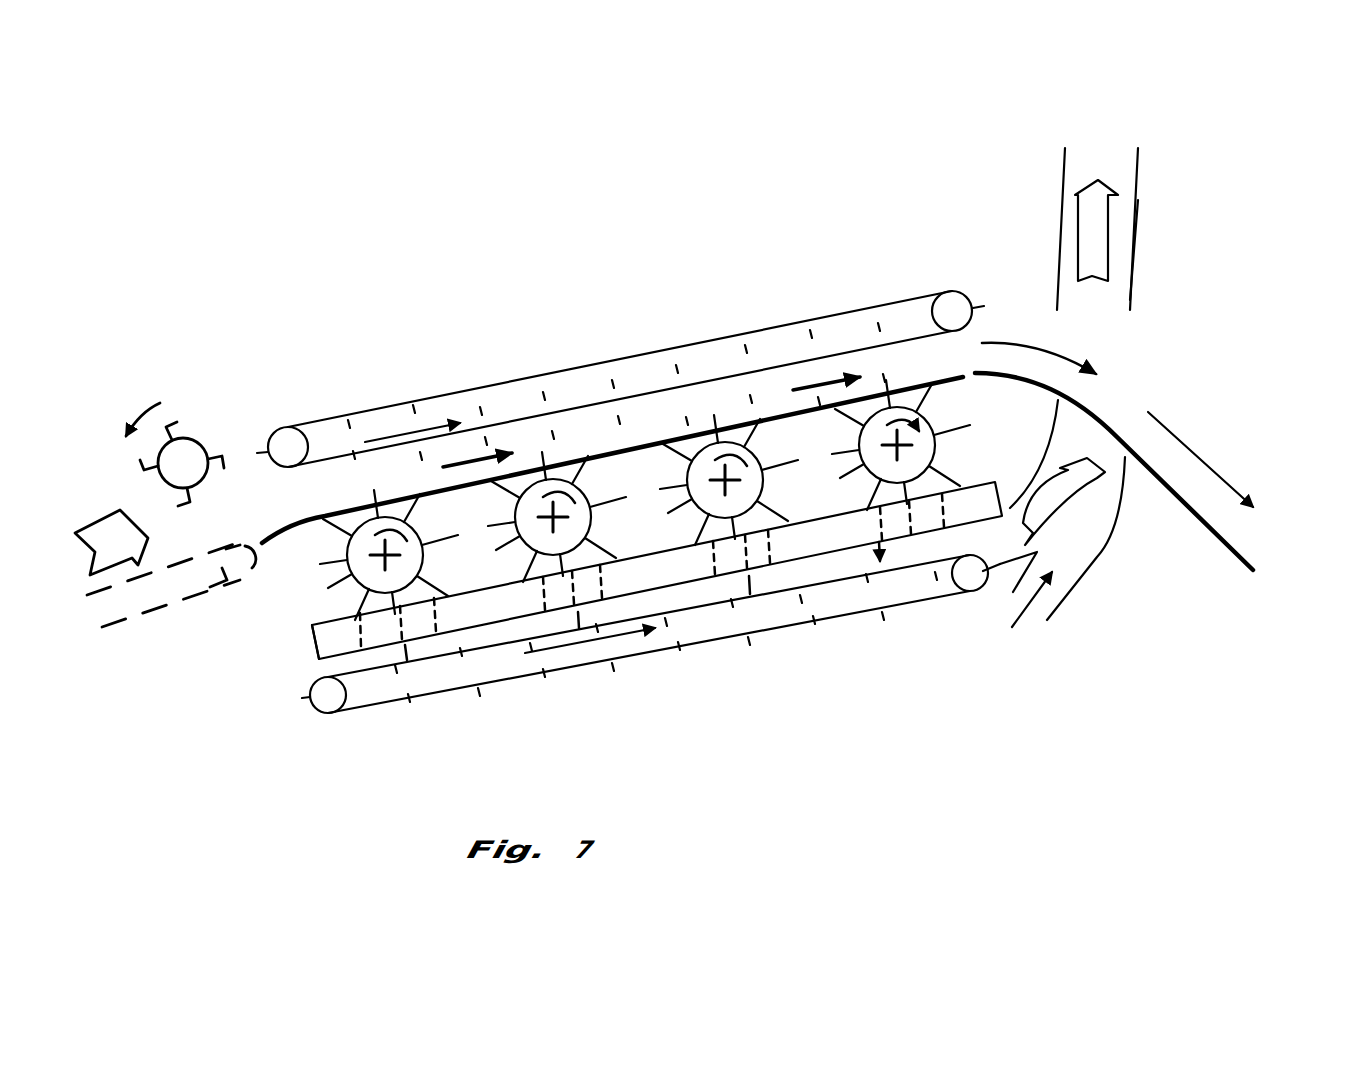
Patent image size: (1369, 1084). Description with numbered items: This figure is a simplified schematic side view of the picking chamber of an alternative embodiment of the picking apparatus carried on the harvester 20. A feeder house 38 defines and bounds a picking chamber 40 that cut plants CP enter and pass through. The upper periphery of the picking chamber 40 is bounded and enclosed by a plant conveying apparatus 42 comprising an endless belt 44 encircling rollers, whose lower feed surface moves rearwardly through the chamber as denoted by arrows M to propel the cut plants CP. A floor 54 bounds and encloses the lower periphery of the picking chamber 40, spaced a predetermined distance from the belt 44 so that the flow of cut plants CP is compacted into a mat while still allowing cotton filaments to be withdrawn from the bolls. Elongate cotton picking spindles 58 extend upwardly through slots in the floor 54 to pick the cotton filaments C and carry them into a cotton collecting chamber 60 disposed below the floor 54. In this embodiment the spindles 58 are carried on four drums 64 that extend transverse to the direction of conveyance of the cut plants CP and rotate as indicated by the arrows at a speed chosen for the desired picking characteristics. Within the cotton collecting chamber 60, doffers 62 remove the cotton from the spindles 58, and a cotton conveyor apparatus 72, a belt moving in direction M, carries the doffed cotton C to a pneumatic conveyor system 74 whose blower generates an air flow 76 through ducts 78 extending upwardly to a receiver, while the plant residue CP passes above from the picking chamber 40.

The harvester 20 is at (1200, 208).
The feeder house 38 is at (1274, 208).
The picking chamber 40 is at (620, 333).
The plant conveying apparatus 42 is at (620, 333).
The endless belt 44 is at (580, 366).
The floor 54 is at (955, 373).
The cotton picking spindles 58 is at (372, 508).
The drums 64 is at (345, 588).
The cotton collecting chamber 60 is at (297, 618).
The doffers 62 is at (310, 648).
The cotton conveyor apparatus 72 is at (752, 641).
The pneumatic conveyor system 74 is at (1067, 600).
The air flow 76 is at (1010, 628).
The ducts 78 is at (1133, 277).
The cotton filaments C is at (1110, 225).
The cut plants CP is at (480, 450).
The direction of belt movement M is at (407, 433).